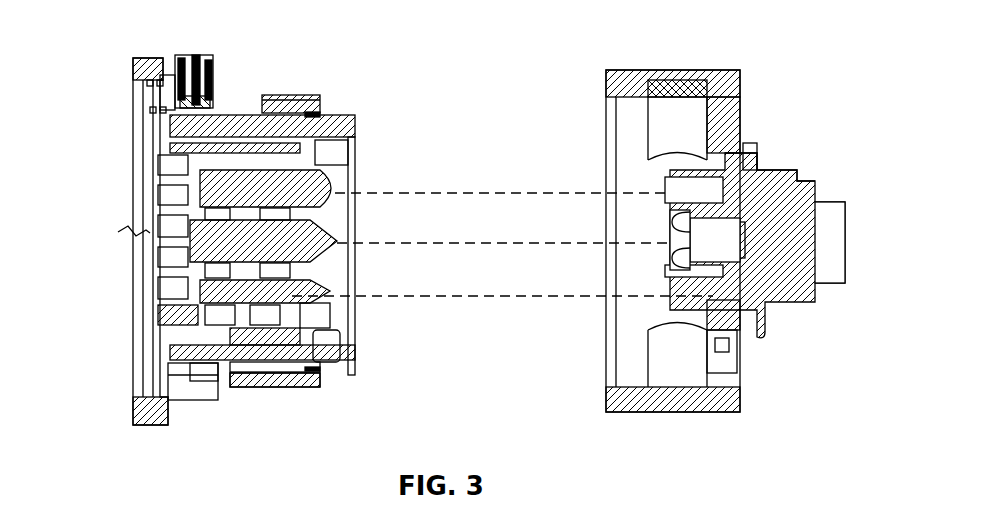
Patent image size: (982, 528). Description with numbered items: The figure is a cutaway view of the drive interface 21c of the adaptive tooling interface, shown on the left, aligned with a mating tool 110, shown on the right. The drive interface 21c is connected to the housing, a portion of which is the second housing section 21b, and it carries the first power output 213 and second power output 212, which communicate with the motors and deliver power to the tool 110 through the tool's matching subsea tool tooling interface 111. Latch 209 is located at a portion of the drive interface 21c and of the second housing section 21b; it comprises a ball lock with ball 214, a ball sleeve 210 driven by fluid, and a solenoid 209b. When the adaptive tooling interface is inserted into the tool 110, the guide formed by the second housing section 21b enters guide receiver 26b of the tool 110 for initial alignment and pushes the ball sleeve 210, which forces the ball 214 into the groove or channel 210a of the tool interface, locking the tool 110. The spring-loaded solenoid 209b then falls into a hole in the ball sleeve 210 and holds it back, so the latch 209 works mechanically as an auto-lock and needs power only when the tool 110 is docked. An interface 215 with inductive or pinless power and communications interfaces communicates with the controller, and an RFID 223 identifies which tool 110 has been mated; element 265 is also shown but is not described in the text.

The latch 209 is at (100, 404).
The solenoid 209b is at (170, 57).
The retaining plate 265 is at (225, 97).
The interface 215 is at (312, 102).
The RFID 223 is at (332, 106).
The ball sleeve 210 is at (327, 143).
The second power output 212 is at (213, 243).
The first power output 213 is at (200, 262).
The ball 214 is at (167, 372).
The second housing section 21b is at (243, 410).
The guide receiver 26b is at (662, 90).
The groove or channel of tool interface 210a is at (683, 160).
The subsea tool tooling interface 111 is at (595, 286).
The tool 110 is at (786, 324).
The drive interface 21c is at (632, 410).